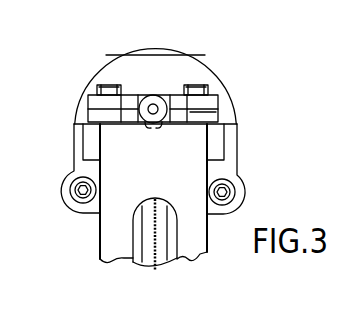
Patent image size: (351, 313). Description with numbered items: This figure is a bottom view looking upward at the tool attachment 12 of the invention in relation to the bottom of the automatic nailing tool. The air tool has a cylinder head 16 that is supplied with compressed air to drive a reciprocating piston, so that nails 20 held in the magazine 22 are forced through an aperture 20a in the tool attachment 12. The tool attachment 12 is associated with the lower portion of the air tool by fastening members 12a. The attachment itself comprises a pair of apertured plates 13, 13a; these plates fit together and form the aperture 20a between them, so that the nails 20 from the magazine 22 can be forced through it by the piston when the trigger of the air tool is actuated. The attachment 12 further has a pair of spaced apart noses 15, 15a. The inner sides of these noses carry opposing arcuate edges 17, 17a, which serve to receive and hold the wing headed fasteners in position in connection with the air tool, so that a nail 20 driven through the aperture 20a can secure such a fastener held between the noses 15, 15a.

The tool attachment 12 is at (79, 108).
The fastening members 12a is at (107, 85).
The apertured plate 13 is at (218, 100).
The apertured plate 13a is at (218, 114).
The nose 15 is at (133, 124).
The nose 15a is at (176, 125).
The cylinder head 16 is at (87, 75).
The arcuate edge 17 is at (152, 123).
The arcuate edge 17a is at (158, 123).
The nails 20 is at (155, 267).
The aperture 20a is at (154, 97).
The magazine 22 is at (198, 245).